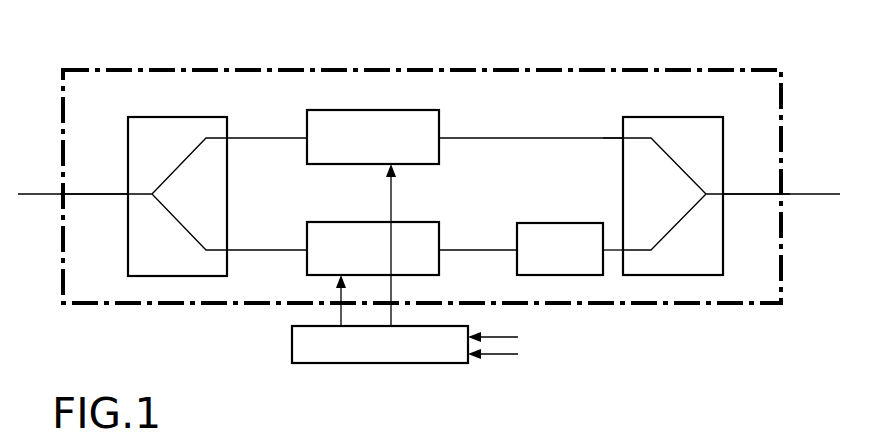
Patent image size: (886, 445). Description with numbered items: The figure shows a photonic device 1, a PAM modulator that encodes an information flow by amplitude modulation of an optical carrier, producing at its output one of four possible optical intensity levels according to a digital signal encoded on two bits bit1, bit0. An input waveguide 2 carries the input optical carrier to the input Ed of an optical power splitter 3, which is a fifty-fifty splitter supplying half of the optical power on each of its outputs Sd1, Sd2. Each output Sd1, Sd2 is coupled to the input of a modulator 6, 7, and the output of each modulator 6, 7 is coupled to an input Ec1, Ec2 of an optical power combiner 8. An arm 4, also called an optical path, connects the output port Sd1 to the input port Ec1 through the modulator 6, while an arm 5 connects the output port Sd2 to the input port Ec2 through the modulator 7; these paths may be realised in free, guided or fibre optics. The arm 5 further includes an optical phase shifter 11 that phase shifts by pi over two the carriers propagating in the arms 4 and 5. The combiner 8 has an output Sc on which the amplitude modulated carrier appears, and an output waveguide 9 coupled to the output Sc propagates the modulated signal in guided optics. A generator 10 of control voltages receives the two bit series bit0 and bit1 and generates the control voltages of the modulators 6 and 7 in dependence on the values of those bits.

The photonic device 1 is at (747, 70).
The input waveguide 2 is at (47, 194).
The optical power splitter 3 is at (137, 126).
The arm 4 is at (488, 138).
The arm 5 is at (488, 249).
The modulator 6 is at (317, 118).
The modulator 7 is at (317, 234).
The optical power combiner 8 is at (707, 263).
The output waveguide 9 is at (758, 194).
The generator of control voltages 10 is at (326, 352).
The optical phase shifter 11 is at (592, 270).
The output of the splitter Sd1 is at (230, 138).
The output of the splitter Sd2 is at (230, 250).
The input of the combiner Ec1 is at (623, 138).
The input of the combiner Ec2 is at (623, 249).
The input of the splitter Ed is at (127, 194).
The output of the combiner Sc is at (723, 194).
The bit bit0 is at (518, 329).
The bit bit1 is at (518, 358).